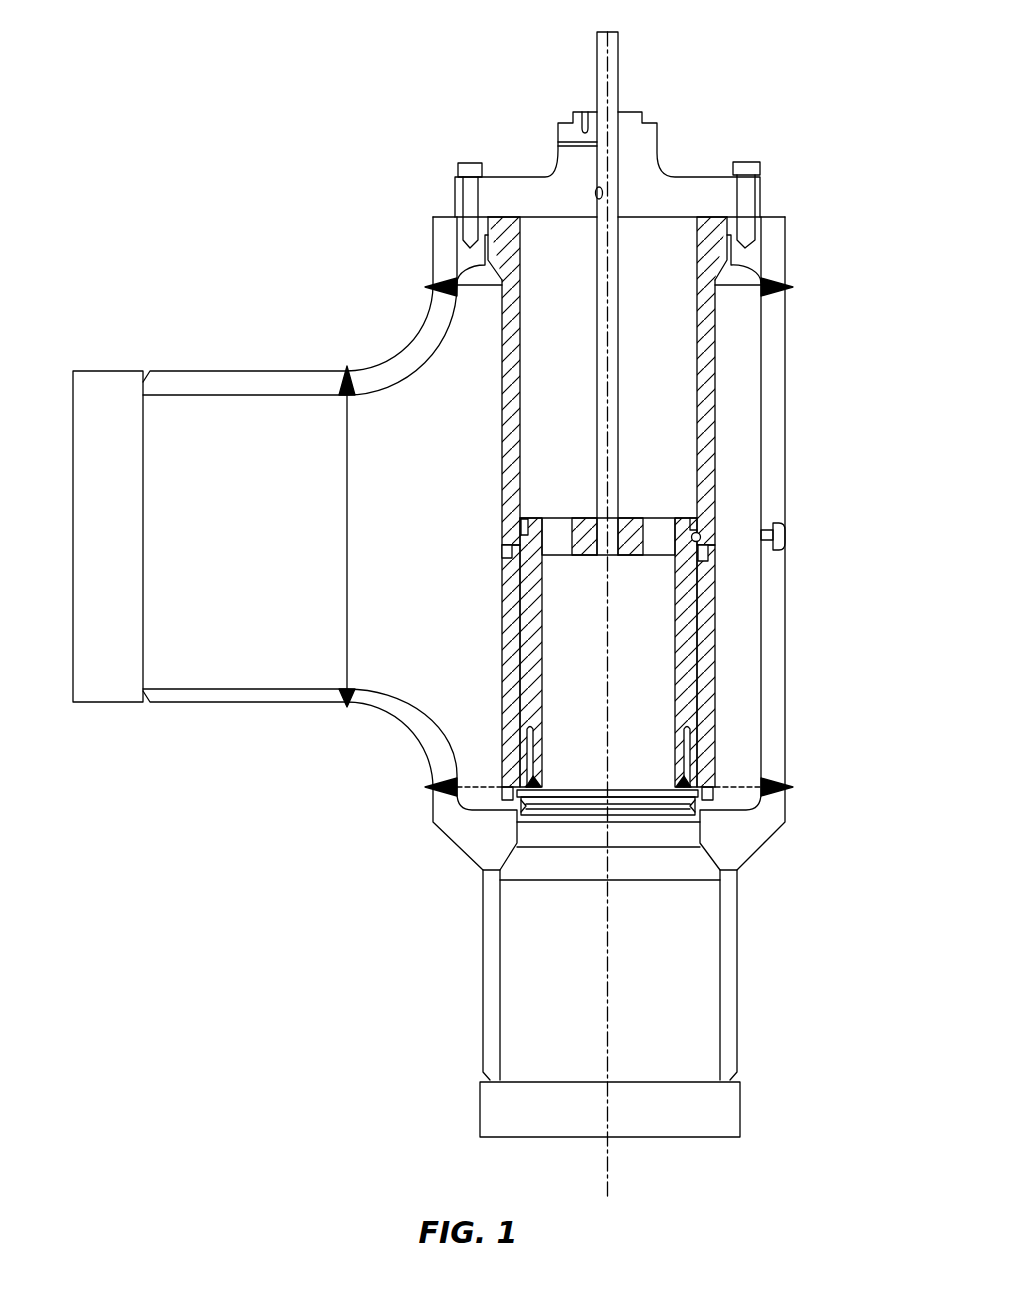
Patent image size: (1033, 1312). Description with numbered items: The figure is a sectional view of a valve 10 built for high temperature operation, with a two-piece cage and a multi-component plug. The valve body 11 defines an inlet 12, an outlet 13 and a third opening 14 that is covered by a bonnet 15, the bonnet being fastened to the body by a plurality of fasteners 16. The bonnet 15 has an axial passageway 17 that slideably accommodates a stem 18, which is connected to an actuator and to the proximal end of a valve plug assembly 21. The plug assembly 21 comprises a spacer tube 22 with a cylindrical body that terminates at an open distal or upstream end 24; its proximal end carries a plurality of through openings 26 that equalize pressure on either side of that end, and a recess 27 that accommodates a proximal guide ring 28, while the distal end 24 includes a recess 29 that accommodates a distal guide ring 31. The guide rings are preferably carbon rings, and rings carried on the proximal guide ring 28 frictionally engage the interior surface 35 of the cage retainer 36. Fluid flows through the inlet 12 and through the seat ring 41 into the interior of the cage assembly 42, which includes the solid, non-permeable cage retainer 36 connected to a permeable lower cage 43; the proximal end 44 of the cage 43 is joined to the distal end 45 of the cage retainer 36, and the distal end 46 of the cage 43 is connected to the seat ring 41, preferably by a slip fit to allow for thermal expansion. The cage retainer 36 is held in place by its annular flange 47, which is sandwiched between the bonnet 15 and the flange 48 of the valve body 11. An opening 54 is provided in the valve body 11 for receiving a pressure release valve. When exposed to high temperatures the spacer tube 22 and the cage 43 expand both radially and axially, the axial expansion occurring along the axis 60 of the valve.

The valve 10 is at (203, 106).
The valve body 11 is at (254, 356).
The inlet 12 is at (545, 1063).
The outlet 13 is at (155, 635).
The third opening 14 is at (512, 216).
The bonnet 15 is at (690, 165).
The fasteners 16 is at (468, 163).
The axial passageway 17 is at (596, 190).
The stem 18 is at (618, 58).
The valve plug assembly 21 is at (701, 637).
The spacer tube 22 is at (543, 633).
The distal end 24 is at (543, 743).
The through openings 26 is at (667, 530).
The recess 27 is at (700, 520).
The proximal guide ring 28 is at (520, 500).
The recess 29 is at (700, 762).
The distal guide ring 31 is at (527, 752).
The interior surface 35 is at (697, 333).
The cage retainer 36 is at (718, 368).
The seat ring 41 is at (656, 824).
The cage assembly 42 is at (476, 544).
The cage 43 is at (717, 692).
The proximal end 44 is at (707, 561).
The distal end 45 is at (707, 530).
The distal end 46 is at (540, 603).
The annular flange 47 is at (755, 230).
The flange 48 is at (485, 265).
The opening 54 is at (790, 535).
The axis 60 is at (608, 1155).